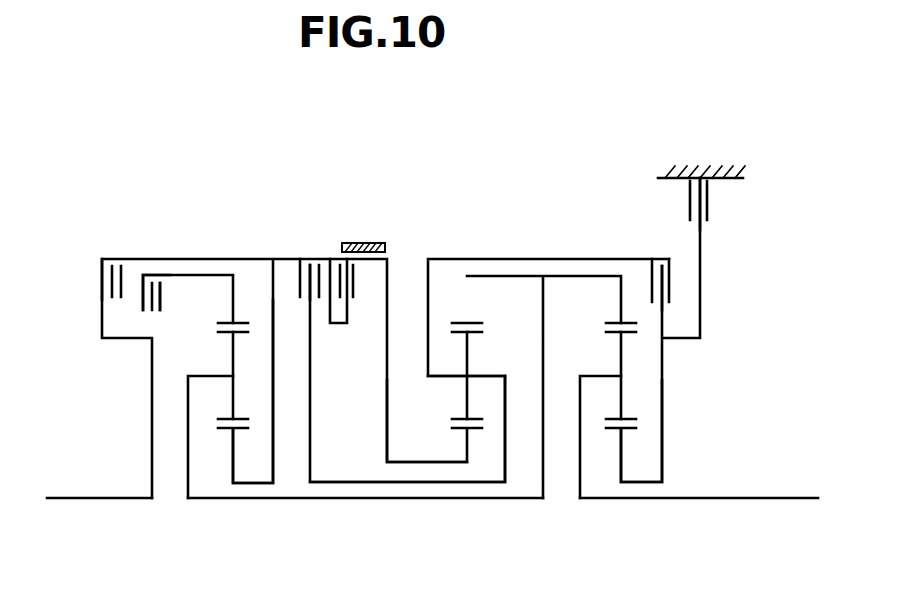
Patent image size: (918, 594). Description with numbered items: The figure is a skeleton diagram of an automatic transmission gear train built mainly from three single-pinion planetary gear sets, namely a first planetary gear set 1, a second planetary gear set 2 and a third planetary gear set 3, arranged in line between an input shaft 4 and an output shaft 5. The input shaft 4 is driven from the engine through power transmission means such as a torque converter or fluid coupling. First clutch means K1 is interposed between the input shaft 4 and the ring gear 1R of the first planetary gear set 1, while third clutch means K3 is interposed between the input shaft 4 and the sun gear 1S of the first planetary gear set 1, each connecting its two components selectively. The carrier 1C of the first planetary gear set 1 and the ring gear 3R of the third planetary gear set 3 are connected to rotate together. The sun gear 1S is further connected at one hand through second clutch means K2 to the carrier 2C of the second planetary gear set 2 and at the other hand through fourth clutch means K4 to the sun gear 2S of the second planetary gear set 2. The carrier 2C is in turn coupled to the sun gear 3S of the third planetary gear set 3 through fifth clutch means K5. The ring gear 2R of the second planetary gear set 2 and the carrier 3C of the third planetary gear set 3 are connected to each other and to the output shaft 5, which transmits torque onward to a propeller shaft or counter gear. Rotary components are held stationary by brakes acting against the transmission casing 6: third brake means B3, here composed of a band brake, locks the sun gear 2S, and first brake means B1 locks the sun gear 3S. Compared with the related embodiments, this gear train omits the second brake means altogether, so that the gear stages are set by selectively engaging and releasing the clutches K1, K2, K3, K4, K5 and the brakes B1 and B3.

The third clutch means K3 is at (111, 265).
The first clutch means K1 is at (168, 295).
The ring gear 1R is at (235, 323).
The carrier 1C is at (218, 374).
The sun gear 1S is at (235, 430).
The input shaft 4 is at (98, 498).
The first planetary gear set 1 is at (220, 488).
The second clutch means K2 is at (308, 267).
The third brake means B3 is at (363, 236).
The fourth clutch means K4 is at (354, 291).
The ring gear 2R is at (470, 323).
The carrier 2C is at (478, 362).
The sun gear 2S is at (465, 431).
The second planetary gear set 2 is at (455, 472).
The ring gear 3R is at (618, 323).
The carrier 3C is at (614, 375).
The sun gear 3S is at (622, 430).
The third planetary gear set 3 is at (608, 484).
The output shaft 5 is at (736, 498).
The fifth clutch means K5 is at (655, 270).
The first brake means B1 is at (695, 185).
The transmission casing 6 is at (727, 168).